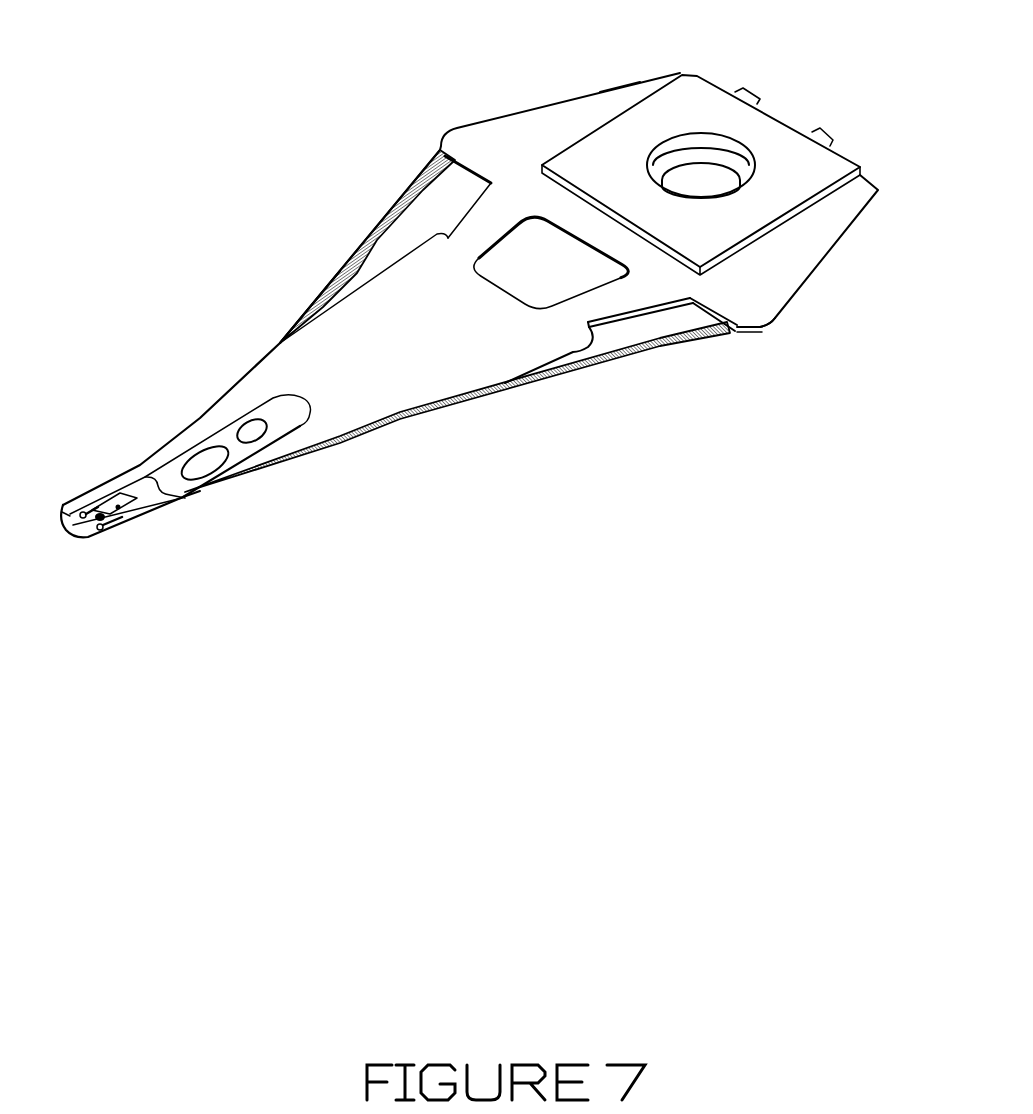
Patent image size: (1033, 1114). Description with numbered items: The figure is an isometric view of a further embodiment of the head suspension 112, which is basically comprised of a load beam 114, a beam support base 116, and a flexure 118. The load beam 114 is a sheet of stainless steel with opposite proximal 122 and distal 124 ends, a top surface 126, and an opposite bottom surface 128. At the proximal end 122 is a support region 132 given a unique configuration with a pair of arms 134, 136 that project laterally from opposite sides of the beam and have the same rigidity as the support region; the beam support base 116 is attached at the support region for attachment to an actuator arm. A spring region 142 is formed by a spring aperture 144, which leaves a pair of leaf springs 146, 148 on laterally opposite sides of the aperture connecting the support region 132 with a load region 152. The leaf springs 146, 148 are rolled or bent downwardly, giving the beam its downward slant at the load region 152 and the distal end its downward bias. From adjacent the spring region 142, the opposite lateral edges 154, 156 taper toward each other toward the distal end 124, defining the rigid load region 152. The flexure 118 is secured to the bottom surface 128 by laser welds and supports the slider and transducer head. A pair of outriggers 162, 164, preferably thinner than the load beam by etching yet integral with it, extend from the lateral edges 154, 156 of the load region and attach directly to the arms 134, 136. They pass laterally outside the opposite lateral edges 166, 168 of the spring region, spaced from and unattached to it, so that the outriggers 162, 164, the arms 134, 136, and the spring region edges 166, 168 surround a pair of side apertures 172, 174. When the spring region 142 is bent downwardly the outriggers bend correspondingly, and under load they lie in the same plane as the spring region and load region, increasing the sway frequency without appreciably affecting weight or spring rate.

The head suspension 112 is at (268, 167).
The load beam 114 is at (298, 377).
The beam support base 116 is at (710, 103).
The flexure 118 is at (125, 479).
The proximal end 122 is at (845, 148).
The distal end 124 is at (67, 548).
The top surface 126 is at (396, 370).
The bottom surface 128 is at (423, 365).
The support region 132 is at (608, 102).
The arm 134 is at (773, 300).
The arm 136 is at (463, 145).
The spring region 142 is at (667, 308).
The spring aperture 144 is at (600, 268).
The leaf spring 146 is at (623, 303).
The leaf spring 148 is at (473, 220).
The load region 152 is at (355, 397).
The lateral edge 154 is at (210, 490).
The lateral edge 156 is at (197, 424).
The outrigger 162 is at (502, 390).
The outrigger 164 is at (313, 306).
The lateral edge of the spring region 166 is at (693, 303).
The lateral edge of the spring region 168 is at (435, 187).
The side aperture 172 is at (610, 337).
The side aperture 174 is at (417, 225).